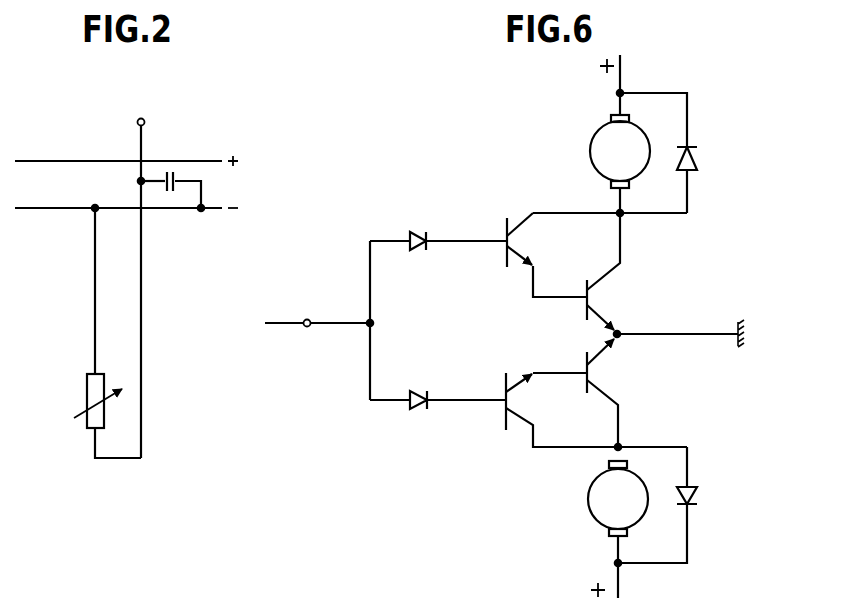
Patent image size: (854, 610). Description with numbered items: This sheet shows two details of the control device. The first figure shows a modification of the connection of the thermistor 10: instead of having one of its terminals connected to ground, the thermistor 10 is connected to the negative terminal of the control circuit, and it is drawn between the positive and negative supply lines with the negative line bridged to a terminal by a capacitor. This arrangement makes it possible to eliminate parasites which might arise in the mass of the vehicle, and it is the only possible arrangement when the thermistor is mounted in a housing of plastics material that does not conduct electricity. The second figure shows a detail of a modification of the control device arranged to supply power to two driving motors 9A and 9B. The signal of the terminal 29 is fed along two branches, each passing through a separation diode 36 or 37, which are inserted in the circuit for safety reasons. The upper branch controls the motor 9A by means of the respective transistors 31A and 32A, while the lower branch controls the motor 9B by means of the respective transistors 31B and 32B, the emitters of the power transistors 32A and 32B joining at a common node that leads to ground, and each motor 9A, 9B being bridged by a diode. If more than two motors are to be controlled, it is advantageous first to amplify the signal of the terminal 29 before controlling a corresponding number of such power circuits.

In FIG. 2, the thermistor 10 is at (88, 400).
In FIG. 6, the terminal 29 is at (305, 326).
In FIG. 6, the separation diode 36 is at (425, 232).
In FIG. 6, the separation diode 37 is at (425, 410).
In FIG. 6, the transistor 31A is at (528, 219).
In FIG. 6, the transistor 31B is at (516, 418).
In FIG. 6, the transistor 32A is at (607, 283).
In FIG. 6, the transistor 32B is at (605, 379).
In FIG. 6, the motor 9A is at (603, 137).
In FIG. 6, the motor 9B is at (593, 505).